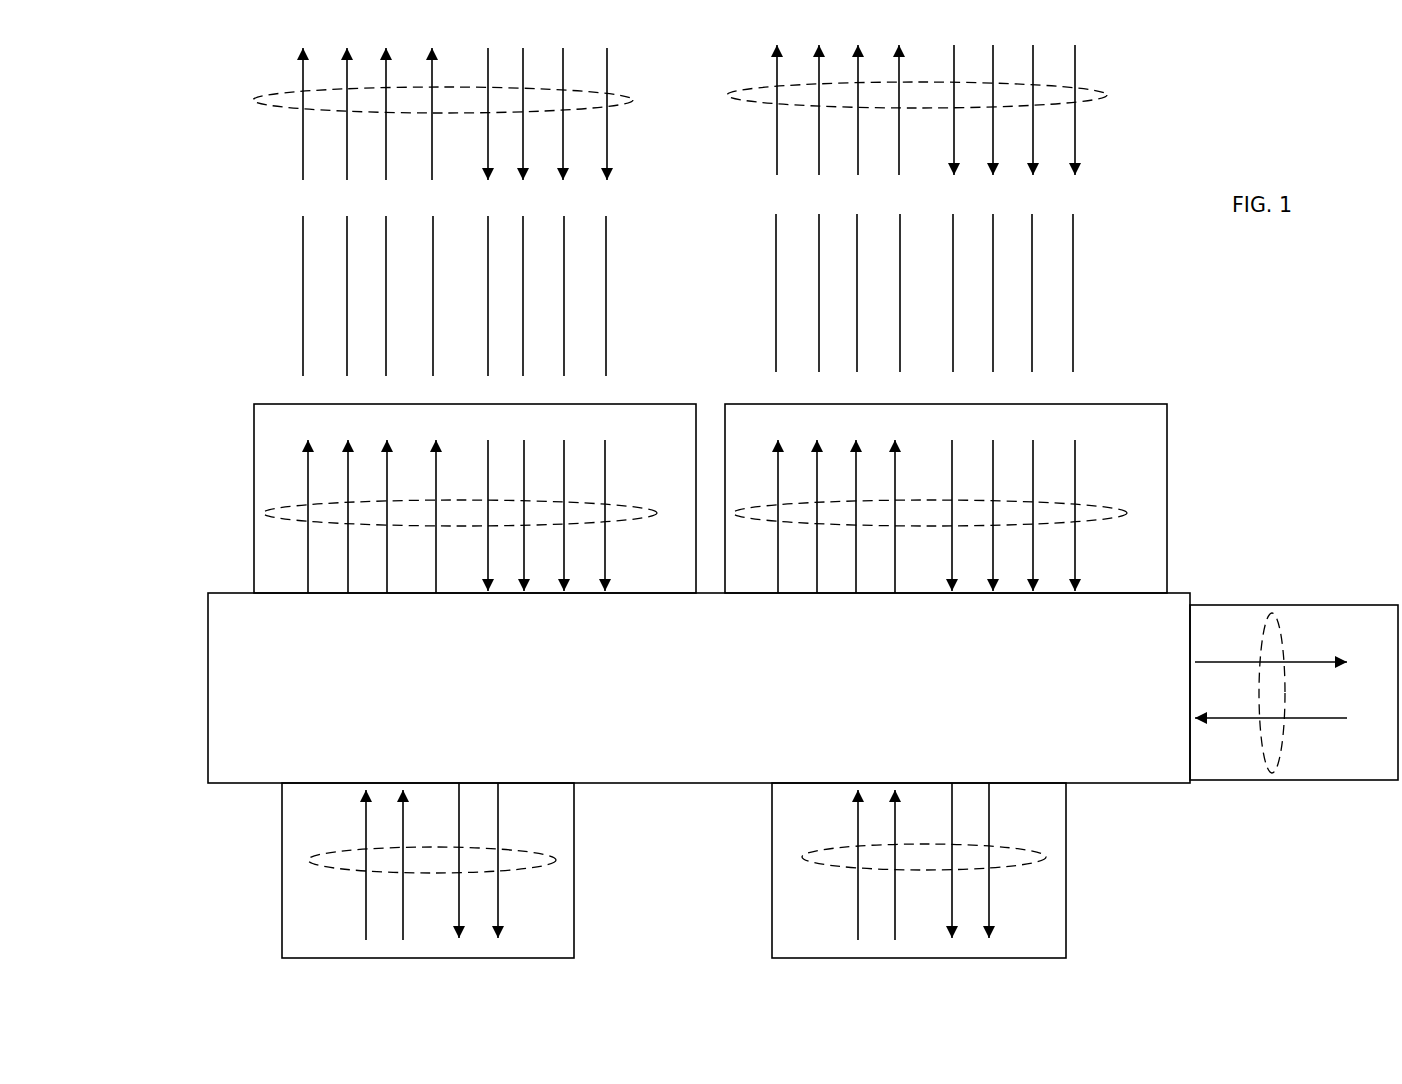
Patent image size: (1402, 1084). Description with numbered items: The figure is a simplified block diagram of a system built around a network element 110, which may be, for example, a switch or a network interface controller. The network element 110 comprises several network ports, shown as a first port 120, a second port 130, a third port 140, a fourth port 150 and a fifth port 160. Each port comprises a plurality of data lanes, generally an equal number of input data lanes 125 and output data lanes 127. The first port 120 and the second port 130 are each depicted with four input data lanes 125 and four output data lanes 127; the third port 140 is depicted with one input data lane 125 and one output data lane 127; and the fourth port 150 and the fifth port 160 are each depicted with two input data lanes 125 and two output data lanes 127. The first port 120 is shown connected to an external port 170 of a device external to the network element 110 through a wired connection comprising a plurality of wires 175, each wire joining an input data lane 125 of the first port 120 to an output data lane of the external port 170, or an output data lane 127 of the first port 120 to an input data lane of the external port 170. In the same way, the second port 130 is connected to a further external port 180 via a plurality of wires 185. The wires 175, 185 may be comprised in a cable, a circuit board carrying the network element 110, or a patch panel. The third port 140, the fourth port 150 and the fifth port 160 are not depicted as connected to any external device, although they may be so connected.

The network element 110 is at (208, 762).
The port 1 120 is at (254, 514).
The input data lanes 125 is at (622, 455).
The output data lanes 127 is at (332, 443).
The port 2 130 is at (1167, 525).
The port 3 140 is at (1252, 605).
The port 4 150 is at (1066, 900).
The port 5 160 is at (574, 902).
The external port 170 is at (228, 101).
The plurality of wires 175 is at (280, 297).
The external port 180 is at (1130, 101).
The plurality of wires 185 is at (1098, 300).